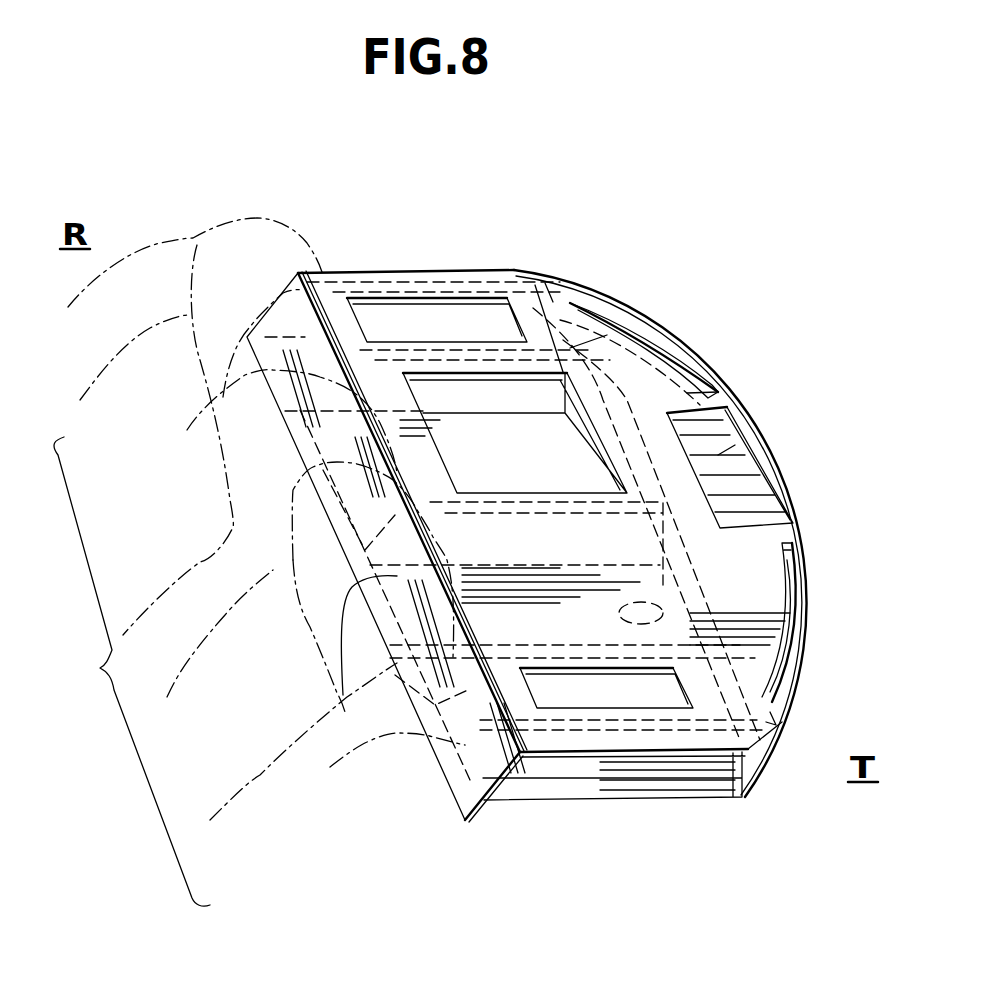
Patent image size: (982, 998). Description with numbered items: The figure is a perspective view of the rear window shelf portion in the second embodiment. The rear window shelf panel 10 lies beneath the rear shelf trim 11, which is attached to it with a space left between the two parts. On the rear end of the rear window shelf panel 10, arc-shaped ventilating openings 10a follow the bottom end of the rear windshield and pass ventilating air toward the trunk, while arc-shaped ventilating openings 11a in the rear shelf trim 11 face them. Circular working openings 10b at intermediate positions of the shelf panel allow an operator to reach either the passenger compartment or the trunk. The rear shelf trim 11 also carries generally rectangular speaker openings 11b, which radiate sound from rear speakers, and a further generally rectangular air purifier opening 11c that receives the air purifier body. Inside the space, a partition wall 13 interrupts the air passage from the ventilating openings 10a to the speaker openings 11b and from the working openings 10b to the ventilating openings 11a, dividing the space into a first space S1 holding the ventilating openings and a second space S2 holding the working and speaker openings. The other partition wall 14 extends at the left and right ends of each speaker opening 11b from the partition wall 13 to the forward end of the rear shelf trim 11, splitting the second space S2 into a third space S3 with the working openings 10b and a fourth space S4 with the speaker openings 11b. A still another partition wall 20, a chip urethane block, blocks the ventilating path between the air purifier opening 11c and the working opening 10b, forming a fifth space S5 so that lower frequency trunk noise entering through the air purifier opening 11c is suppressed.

The rear window shelf panel 10 is at (722, 800).
The ventilating opening 10a is at (688, 393).
The working opening 10b is at (655, 614).
The rear shelf trim 11 is at (557, 300).
The ventilating opening 11a is at (653, 343).
The speaker opening 11b is at (418, 306).
The air purifier opening 11c is at (485, 382).
The partition wall 13 is at (572, 350).
The other partition wall 14 is at (387, 353).
The still another partition wall 20 is at (643, 503).
The first space S1 is at (718, 455).
The second space S2 is at (132, 671).
The third space S3 is at (413, 620).
The fourth space S4 is at (283, 357).
The fifth space S5 is at (327, 450).